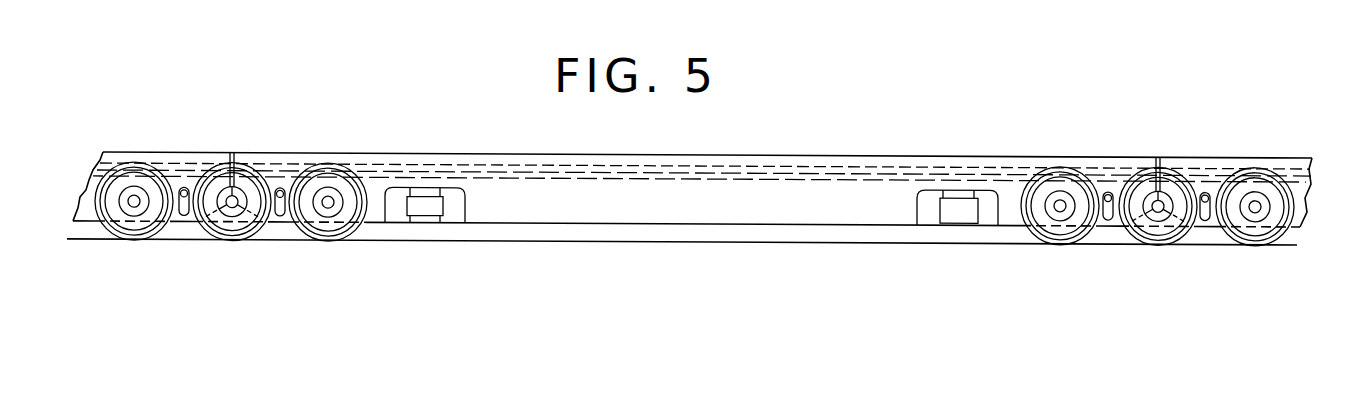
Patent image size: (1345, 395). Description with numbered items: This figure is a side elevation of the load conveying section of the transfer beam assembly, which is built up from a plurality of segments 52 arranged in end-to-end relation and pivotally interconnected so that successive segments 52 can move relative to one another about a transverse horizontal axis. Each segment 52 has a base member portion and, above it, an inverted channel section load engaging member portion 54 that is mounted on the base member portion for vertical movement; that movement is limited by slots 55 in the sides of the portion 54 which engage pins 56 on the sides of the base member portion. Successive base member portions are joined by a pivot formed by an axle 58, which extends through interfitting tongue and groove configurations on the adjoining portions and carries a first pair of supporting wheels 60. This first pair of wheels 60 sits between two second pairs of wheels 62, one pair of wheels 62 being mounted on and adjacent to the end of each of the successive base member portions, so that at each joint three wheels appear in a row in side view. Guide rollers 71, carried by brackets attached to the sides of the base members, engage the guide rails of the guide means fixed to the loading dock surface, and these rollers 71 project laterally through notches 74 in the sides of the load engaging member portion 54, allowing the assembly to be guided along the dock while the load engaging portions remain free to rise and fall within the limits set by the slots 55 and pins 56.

The segment 52 is at (172, 152).
The load engaging member portion 54 is at (578, 153).
The slots 55 is at (1105, 221).
The pins 56 is at (1112, 191).
The axle 58 is at (232, 202).
The first pair of supporting wheels 60 is at (253, 236).
The second pairs of wheels 62 is at (110, 238).
The guide rollers 71 is at (410, 208).
The notches 74 is at (920, 215).